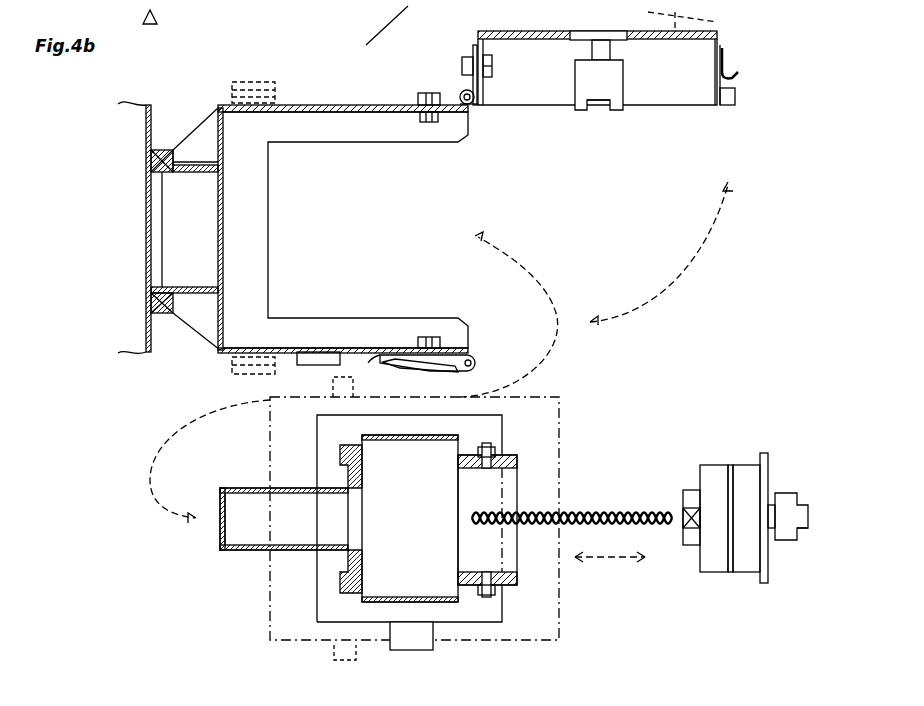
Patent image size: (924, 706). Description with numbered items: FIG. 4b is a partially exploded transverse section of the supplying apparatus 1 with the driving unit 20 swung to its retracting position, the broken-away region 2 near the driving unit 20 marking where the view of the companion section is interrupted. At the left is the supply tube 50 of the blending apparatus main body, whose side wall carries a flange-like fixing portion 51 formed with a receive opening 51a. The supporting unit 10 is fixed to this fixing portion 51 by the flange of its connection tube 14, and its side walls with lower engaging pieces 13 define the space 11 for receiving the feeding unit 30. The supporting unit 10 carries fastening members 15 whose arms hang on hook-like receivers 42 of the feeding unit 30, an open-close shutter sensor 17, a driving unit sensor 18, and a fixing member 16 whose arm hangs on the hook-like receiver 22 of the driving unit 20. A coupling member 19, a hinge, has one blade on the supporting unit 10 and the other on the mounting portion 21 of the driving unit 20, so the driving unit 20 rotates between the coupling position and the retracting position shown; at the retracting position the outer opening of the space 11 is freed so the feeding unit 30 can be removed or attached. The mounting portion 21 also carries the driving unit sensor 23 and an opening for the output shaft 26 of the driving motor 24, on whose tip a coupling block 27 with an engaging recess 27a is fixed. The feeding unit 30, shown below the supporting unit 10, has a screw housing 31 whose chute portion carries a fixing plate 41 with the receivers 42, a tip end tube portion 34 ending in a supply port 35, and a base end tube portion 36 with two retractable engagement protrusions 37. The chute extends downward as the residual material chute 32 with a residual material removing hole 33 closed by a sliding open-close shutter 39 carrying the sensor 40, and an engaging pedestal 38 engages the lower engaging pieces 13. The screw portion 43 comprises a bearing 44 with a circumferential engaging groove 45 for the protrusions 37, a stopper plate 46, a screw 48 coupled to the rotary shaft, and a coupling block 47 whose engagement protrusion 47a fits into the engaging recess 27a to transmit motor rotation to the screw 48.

The supplying apparatus 1 is at (327, 202).
The housing unit 2 is at (387, 25).
The supporting unit 10 is at (406, 88).
The space for receiving the feeding unit 11 is at (452, 187).
The lower engaging pieces 13 is at (366, 135).
The connection tube 14 is at (206, 166).
The fastening member 15 is at (246, 82).
The fixing member 16 is at (460, 372).
The open-close shutter sensor 17 is at (320, 365).
The driving unit sensor 18 is at (472, 355).
The coupling member 19 is at (470, 106).
The driving unit 20 is at (595, 83).
The mounting portion 21 is at (717, 35).
The hook-like receiver 22 is at (737, 77).
The driving unit sensor 23 is at (735, 102).
The driving motor 24 is at (718, 22).
The output shaft 26 is at (605, 50).
The coupling block 27 is at (620, 88).
The engaging recess 27a is at (597, 110).
The feeding unit 30 is at (495, 492).
The screw housing 31 is at (350, 537).
The residual material chute 32 is at (443, 600).
The residual material removing hole 33 is at (354, 588).
The tip end tube portion 34 is at (263, 550).
The supply port 35 is at (215, 525).
The base end tube portion 36 is at (508, 588).
The retractable engagement protrusion 37 is at (489, 448).
The engaging pedestal 38 is at (330, 436).
The open-close shutter 39 is at (398, 632).
The open-close shutter sensor 40 is at (414, 628).
The fixing plate 41 is at (560, 605).
The hook-like receiver 42 is at (345, 375).
The screw portion 43 is at (741, 524).
The bearing 44 is at (714, 565).
The engaging groove 45 is at (733, 470).
The stopper plate 46 is at (765, 580).
The coupling block 47 is at (788, 495).
The engagement protrusion 47a is at (808, 520).
The screw 48 is at (601, 505).
The supply tube 50 is at (134, 207).
The fixing portion 51 is at (160, 300).
The receive opening 51a is at (160, 288).